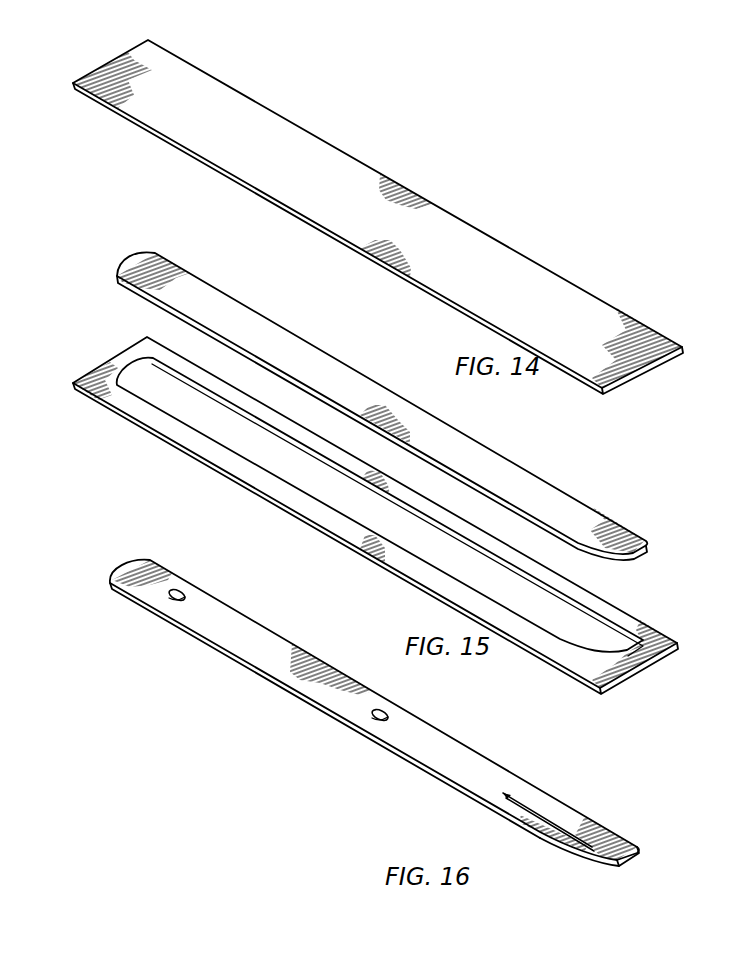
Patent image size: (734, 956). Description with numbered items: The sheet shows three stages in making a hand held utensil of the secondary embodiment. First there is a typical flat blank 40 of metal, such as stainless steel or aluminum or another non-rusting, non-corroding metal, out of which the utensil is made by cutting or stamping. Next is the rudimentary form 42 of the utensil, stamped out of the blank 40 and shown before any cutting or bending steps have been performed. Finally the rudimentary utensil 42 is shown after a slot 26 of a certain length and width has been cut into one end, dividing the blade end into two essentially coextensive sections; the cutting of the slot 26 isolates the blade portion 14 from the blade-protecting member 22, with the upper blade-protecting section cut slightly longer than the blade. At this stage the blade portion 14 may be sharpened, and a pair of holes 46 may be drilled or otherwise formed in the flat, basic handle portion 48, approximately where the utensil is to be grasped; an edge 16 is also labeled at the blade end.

In FIG. 14, the blank 40 is at (527, 272).
In FIG. 15, the rudimentary form of utensil 42 is at (542, 502).
In FIG. 16, the holes 46 is at (178, 603).
In FIG. 16, the handle portion 48 is at (255, 647).
In FIG. 16, the slot 26 is at (528, 805).
In FIG. 16, the blade-protecting member 22 is at (598, 827).
In FIG. 16, the blade portion 14 is at (538, 828).
In FIG. 16, the edge 16 is at (595, 850).